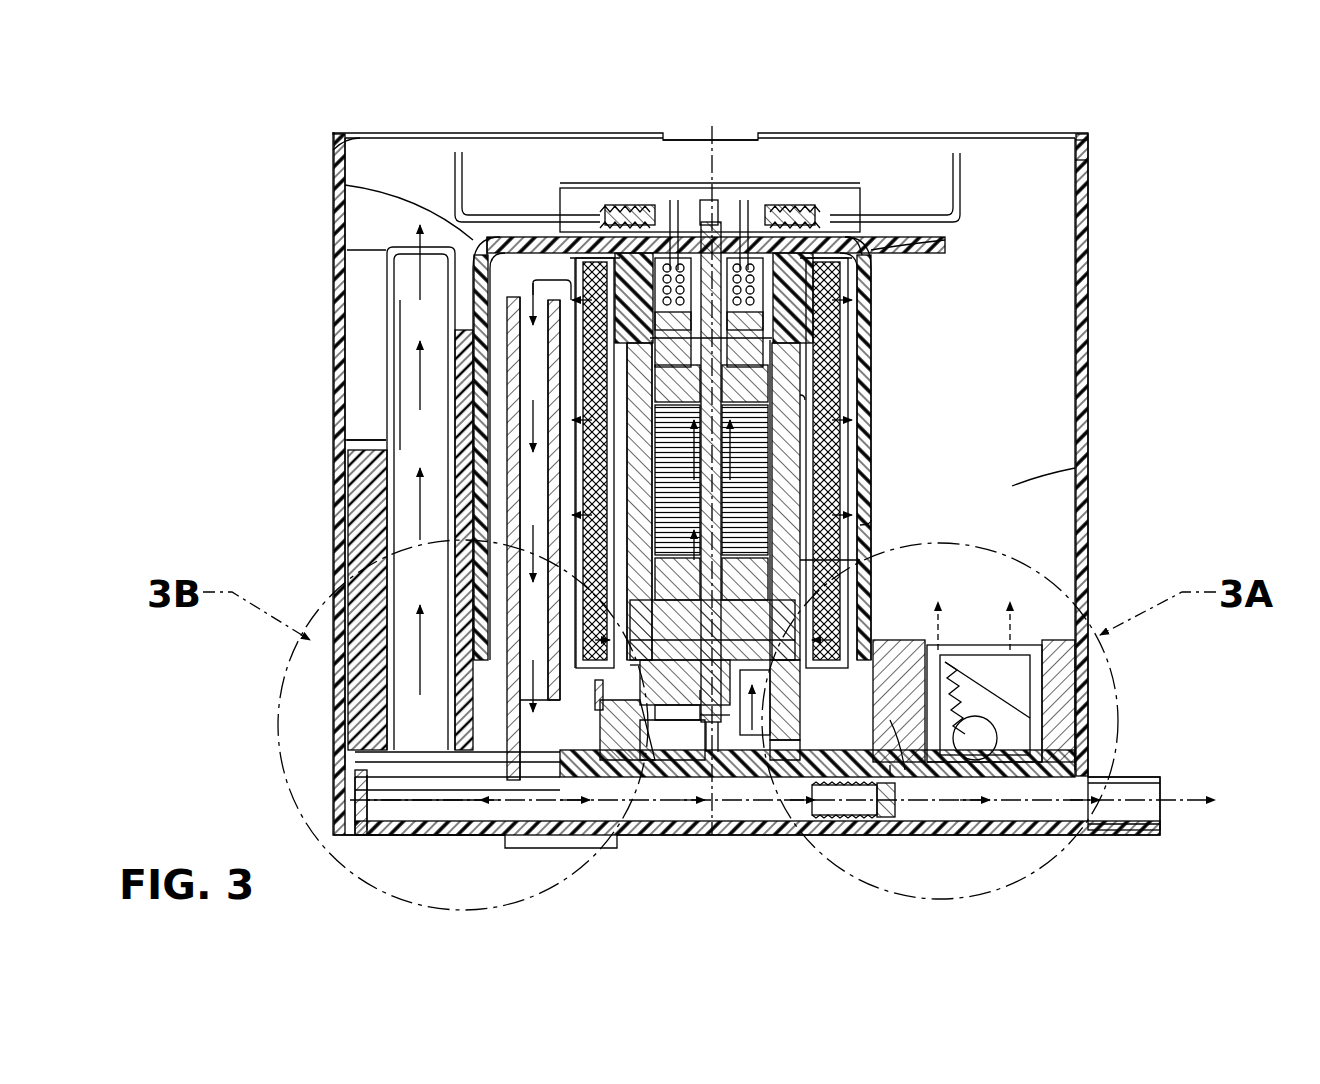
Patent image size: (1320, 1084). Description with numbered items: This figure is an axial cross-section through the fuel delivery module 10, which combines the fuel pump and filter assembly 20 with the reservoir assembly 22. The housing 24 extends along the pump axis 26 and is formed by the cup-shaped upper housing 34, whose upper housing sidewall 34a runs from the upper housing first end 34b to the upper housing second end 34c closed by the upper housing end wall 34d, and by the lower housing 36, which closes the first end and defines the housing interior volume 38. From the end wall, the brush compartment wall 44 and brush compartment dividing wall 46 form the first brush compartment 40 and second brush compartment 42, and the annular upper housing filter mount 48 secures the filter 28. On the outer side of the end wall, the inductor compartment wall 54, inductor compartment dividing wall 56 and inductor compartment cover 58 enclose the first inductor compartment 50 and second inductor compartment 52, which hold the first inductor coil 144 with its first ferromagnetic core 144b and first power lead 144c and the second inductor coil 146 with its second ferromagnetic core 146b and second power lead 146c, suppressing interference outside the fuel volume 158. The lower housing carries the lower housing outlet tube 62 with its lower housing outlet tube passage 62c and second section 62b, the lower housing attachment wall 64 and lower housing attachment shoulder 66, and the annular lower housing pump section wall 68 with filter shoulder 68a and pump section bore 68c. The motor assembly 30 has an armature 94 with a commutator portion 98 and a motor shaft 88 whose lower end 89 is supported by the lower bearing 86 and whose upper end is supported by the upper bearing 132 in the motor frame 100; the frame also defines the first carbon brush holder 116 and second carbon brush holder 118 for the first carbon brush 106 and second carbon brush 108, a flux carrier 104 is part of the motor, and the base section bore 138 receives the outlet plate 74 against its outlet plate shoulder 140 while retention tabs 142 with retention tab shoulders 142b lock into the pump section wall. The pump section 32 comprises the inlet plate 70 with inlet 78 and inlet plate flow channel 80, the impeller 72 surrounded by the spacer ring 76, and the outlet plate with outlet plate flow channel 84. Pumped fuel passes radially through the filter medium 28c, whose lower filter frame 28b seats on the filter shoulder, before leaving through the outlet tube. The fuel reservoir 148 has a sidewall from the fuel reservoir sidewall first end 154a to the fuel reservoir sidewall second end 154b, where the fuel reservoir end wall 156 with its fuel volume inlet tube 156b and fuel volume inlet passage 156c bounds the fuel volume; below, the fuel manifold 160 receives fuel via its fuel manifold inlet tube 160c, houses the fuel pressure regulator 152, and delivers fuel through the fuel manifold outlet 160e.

The fuel delivery module 10 is at (277, 138).
The fuel pump and filter assembly 20 is at (1052, 210).
The reservoir assembly 22 is at (1094, 484).
The housing 24 is at (796, 493).
The pump axis 26 is at (714, 150).
The filter 28 is at (1122, 133).
The lower filter frame 28b is at (700, 722).
The filter medium 28c is at (805, 398).
The motor assembly 30 is at (800, 420).
The pump section 32 is at (1015, 700).
The upper housing 34 is at (870, 350).
The upper housing sidewall 34a is at (862, 520).
The upper housing first end 34b is at (600, 705).
The upper housing second end 34c is at (345, 184).
The upper housing end wall 34d is at (494, 250).
The lower housing 36 is at (873, 764).
The housing interior volume 38 is at (388, 251).
The first brush compartment 40 is at (659, 250).
The second brush compartment 42 is at (766, 200).
The brush compartment wall 44 is at (795, 215).
The brush compartment dividing wall 46 is at (672, 250).
The upper housing filter mount 48 is at (890, 444).
The first inductor compartment 50 is at (565, 237).
The second inductor compartment 52 is at (868, 248).
The inductor compartment wall 54 is at (905, 245).
The inductor compartment dividing wall 56 is at (702, 205).
The inductor compartment cover 58 is at (548, 240).
The lower housing outlet tube 62 is at (315, 500).
The lower housing outlet tube second section 62b is at (560, 742).
The lower housing outlet tube passage 62c is at (638, 540).
The lower housing attachment wall 64 is at (846, 815).
The lower housing attachment shoulder 66 is at (935, 748).
The lower housing pump section wall 68 is at (667, 652).
The filter shoulder 68a is at (915, 722).
The pump section bore 68c is at (785, 700).
The inlet plate 70 is at (714, 750).
The impeller 72 is at (670, 770).
The outlet plate 74 is at (650, 668).
The spacer ring 76 is at (372, 819).
The inlet 78 is at (784, 690).
The inlet plate flow channel 80 is at (624, 700).
The outlet plate flow channel 84 is at (589, 780).
The lower bearing 86 is at (748, 700).
The motor shaft 88 is at (900, 472).
The lower end 89 is at (702, 690).
The armature 94 is at (775, 440).
The commutator portion 98 is at (711, 461).
The motor frame 100 is at (562, 344).
The flux carrier 104 is at (555, 515).
The first carbon brush 106 is at (543, 324).
The second carbon brush 108 is at (714, 298).
The first carbon brush holder 116 is at (562, 300).
The second carbon brush holder 118 is at (713, 501).
The upper bearing 132 is at (652, 358).
The base section bore 138 is at (645, 560).
The outlet plate shoulder 140 is at (790, 590).
The retention tabs 142 is at (697, 499).
The retention tab shoulder 142b is at (645, 585).
The first inductor coil 144 is at (605, 165).
The first ferromagnetic core 144b is at (604, 215).
The first power lead 144c is at (457, 200).
The second inductor coil 146 is at (821, 165).
The second ferromagnetic core 146b is at (795, 217).
The second power lead 146c is at (1090, 166).
The fuel reservoir 148 is at (308, 460).
The fuel pressure regulator 152 is at (990, 656).
The fuel reservoir sidewall first end 154a is at (347, 138).
The fuel reservoir sidewall second end 154b is at (345, 848).
The fuel reservoir end wall 156 is at (406, 805).
The fuel volume inlet tube 156b is at (470, 275).
The fuel volume inlet passage 156c is at (600, 435).
The fuel volume 158 is at (1090, 465).
The fuel manifold 160 is at (719, 840).
The fuel manifold inlet tube 160c is at (361, 802).
The fuel manifold outlet 160e is at (1124, 803).